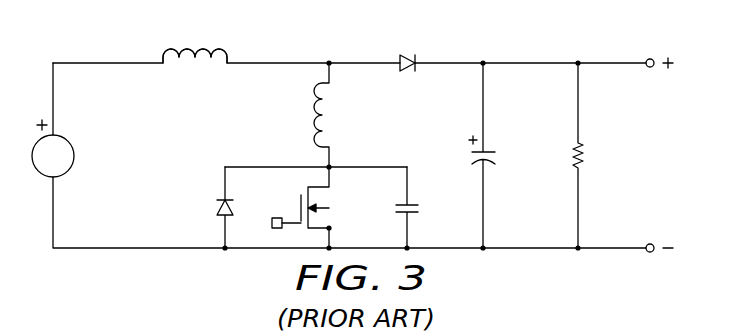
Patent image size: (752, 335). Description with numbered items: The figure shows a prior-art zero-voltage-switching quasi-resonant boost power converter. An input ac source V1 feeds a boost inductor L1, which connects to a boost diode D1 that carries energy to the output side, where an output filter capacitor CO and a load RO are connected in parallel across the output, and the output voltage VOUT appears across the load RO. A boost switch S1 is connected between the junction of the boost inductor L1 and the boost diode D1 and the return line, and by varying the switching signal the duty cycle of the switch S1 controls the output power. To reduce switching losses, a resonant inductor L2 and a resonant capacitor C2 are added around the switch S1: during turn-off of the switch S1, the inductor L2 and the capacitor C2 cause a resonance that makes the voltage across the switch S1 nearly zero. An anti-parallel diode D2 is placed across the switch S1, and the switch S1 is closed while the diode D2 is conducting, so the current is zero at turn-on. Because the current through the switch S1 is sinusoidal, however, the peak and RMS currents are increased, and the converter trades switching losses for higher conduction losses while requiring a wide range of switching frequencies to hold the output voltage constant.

The input ac source V1 is at (65, 148).
The boost inductor L1 is at (195, 45).
The inductor L2 is at (308, 115).
The boost diode D1 is at (405, 65).
The anti-parallel diode D2 is at (211, 207).
The boost switch S1 is at (313, 207).
The capacitor C2 is at (419, 207).
The output filter capacitor CO is at (494, 155).
The load RO is at (590, 155).
The output voltage VOUT is at (674, 160).